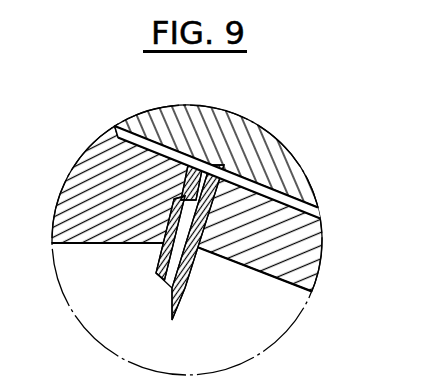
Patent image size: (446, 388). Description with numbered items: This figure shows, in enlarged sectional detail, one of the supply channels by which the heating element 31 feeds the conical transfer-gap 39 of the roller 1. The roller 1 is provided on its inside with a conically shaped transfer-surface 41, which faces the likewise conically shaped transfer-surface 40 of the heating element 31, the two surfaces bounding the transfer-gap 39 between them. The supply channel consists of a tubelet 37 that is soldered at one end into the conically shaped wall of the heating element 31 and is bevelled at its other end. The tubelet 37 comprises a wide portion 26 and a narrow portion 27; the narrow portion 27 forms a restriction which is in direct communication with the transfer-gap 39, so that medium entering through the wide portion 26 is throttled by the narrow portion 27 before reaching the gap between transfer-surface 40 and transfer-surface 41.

The roller 1 is at (221, 122).
The wide portion 26 is at (168, 292).
The narrow portion 27 is at (195, 185).
The heating element 31 is at (265, 272).
The tubelet 37 is at (193, 281).
The transfer-gap 39 is at (312, 210).
The transfer-surface of heating element 40 is at (308, 222).
The transfer-surface of roller 41 is at (286, 193).